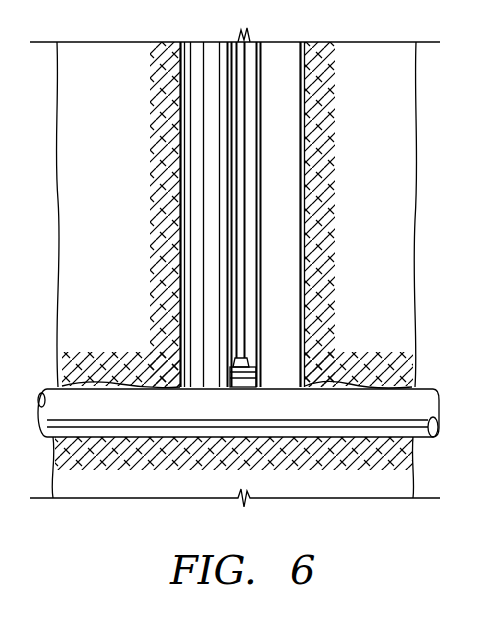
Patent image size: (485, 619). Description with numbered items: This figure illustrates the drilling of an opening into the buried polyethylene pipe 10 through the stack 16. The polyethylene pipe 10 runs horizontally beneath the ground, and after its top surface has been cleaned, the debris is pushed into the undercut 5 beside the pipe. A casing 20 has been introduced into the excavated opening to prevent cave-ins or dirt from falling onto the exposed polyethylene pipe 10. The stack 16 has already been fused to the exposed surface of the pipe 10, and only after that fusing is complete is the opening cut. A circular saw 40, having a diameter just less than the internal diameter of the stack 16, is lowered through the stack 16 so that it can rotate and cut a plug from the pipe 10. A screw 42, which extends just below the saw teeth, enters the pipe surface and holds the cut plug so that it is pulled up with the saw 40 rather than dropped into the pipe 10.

The undercut 5 is at (315, 390).
The polyethylene pipe 10 is at (123, 413).
The stack 16 is at (258, 207).
The casing 20 is at (300, 138).
The circular saw 40 is at (258, 370).
The screw 42 is at (232, 388).